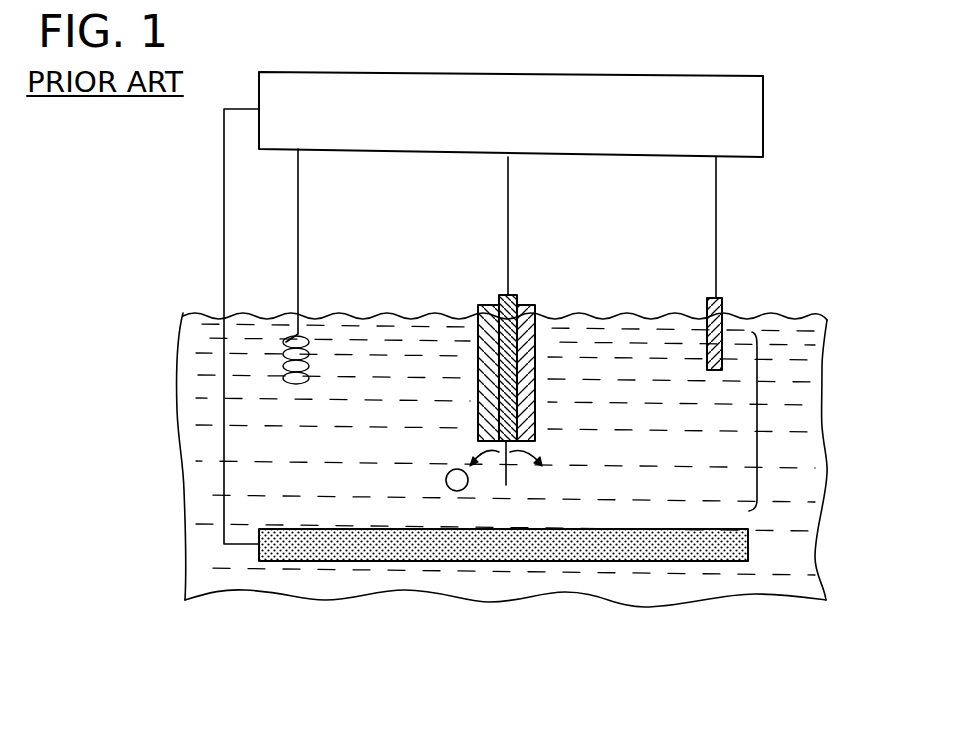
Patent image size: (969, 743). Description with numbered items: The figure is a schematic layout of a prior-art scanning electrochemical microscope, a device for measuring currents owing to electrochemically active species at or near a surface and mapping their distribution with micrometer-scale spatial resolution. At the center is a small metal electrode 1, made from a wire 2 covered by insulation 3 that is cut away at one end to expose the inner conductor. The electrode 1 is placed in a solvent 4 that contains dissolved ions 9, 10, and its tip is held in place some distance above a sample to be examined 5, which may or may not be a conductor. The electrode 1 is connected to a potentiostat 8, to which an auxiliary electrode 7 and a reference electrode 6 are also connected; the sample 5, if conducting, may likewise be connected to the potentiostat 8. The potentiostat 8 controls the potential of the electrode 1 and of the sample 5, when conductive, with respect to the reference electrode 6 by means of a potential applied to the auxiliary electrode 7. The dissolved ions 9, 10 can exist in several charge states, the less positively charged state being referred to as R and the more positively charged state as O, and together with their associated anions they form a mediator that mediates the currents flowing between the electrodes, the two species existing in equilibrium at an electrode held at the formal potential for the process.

The metal electrode 1 is at (506, 485).
The wire 2 is at (515, 293).
The insulation 3 is at (482, 355).
The solvent 4 is at (757, 421).
The sample to be examined 5 is at (552, 550).
The reference electrode 6 is at (730, 298).
The auxiliary electrode 7 is at (298, 228).
The potentiostat 8 is at (755, 105).
The dissolved ions 9 is at (446, 477).
The dissolved ions 10 is at (566, 478).